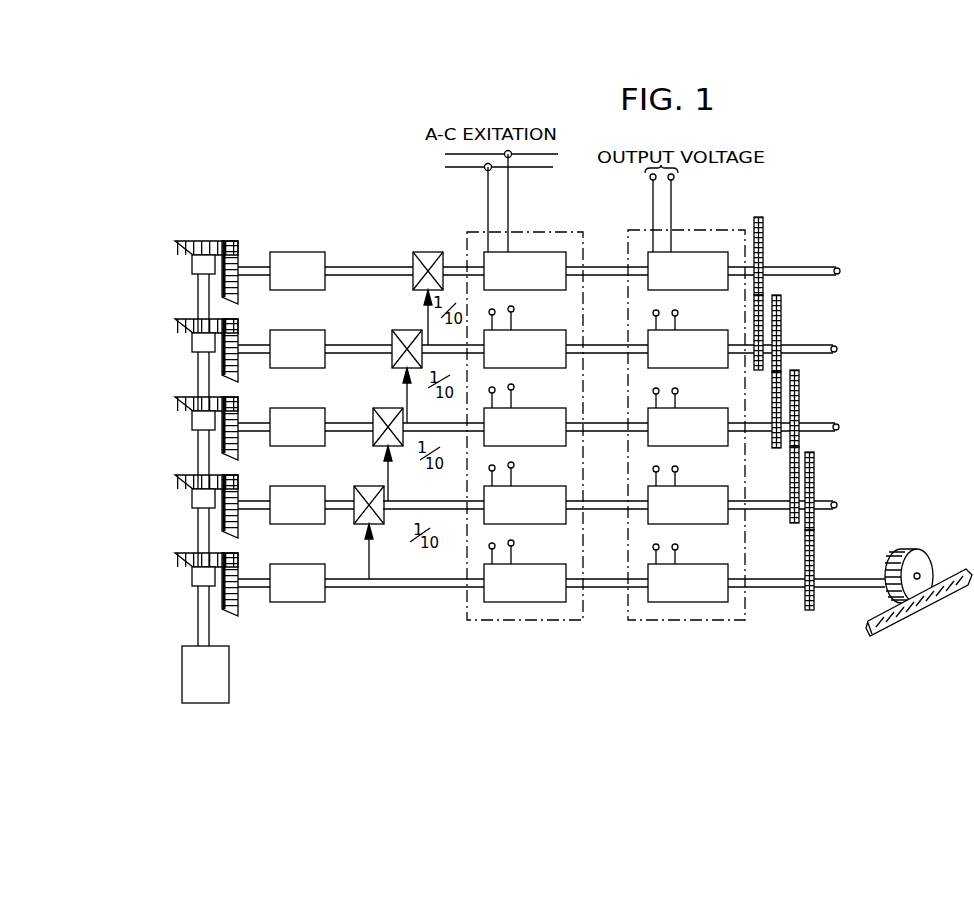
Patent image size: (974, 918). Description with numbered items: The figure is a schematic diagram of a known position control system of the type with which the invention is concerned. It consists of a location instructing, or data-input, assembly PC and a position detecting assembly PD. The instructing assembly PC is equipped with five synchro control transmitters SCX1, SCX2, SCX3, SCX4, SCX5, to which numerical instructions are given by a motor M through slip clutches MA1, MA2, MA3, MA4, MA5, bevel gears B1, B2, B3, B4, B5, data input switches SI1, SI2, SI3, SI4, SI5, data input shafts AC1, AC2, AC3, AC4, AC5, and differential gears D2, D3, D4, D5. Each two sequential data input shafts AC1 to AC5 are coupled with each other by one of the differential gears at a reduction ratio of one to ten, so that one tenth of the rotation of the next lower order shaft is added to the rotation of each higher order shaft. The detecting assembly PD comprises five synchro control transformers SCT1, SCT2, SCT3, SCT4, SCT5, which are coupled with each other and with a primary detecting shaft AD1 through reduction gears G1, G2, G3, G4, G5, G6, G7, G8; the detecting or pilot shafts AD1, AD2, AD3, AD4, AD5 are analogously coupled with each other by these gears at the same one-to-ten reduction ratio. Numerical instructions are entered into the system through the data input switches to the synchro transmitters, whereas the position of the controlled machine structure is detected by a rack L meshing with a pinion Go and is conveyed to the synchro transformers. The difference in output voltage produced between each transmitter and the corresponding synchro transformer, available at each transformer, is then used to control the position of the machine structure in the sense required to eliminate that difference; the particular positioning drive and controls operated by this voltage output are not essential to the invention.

The motor M is at (205, 674).
The bevel gear B1 is at (186, 553).
The bevel gear B2 is at (186, 475).
The bevel gear B3 is at (186, 397).
The bevel gear B4 is at (186, 318).
The bevel gear B5 is at (186, 240).
The slip clutch MA1 is at (192, 575).
The slip clutch MA2 is at (192, 497).
The slip clutch MA3 is at (192, 419).
The slip clutch MA4 is at (192, 341).
The slip clutch MA5 is at (192, 263).
The data input switch SI1 is at (297, 583).
The data input switch SI2 is at (297, 505).
The data input switch SI3 is at (297, 427).
The data input switch SI4 is at (297, 349).
The data input switch SI5 is at (297, 271).
The data input shaft AC1 is at (340, 579).
The data input shaft AC2 is at (348, 501).
The data input shaft AC3 is at (350, 423).
The data input shaft AC4 is at (353, 345).
The data input shaft AC5 is at (360, 267).
The differential gear D2 is at (370, 486).
The differential gear D3 is at (394, 405).
The differential gear D4 is at (408, 327).
The differential gear D5 is at (430, 247).
The synchro control transmitter SCX1 is at (525, 571).
The synchro control transmitter SCX2 is at (525, 493).
The synchro control transmitter SCX3 is at (525, 415).
The synchro control transmitter SCX4 is at (525, 337).
The synchro control transmitter SCX5 is at (525, 222).
The synchro control transformer SCT1 is at (688, 573).
The synchro control transformer SCT2 is at (688, 495).
The synchro control transformer SCT3 is at (688, 417).
The synchro control transformer SCT4 is at (688, 339).
The synchro control transformer SCT5 is at (688, 235).
The location instructing assembly PC is at (528, 232).
The position detecting assembly PD is at (692, 235).
The primary detecting shaft AD1 is at (858, 580).
The detecting shaft AD2 is at (834, 503).
The detecting shaft AD3 is at (836, 428).
The detecting shaft AD4 is at (830, 340).
The detecting shaft AD5 is at (828, 261).
The reduction gear G1 is at (815, 566).
The reduction gear G2 is at (814, 484).
The reduction gear G3 is at (797, 527).
The reduction gear G4 is at (799, 412).
The reduction gear G5 is at (776, 448).
The reduction gear G6 is at (781, 331).
The reduction gear G7 is at (759, 362).
The reduction gear G8 is at (762, 232).
The pinion Go is at (927, 566).
The rack L is at (931, 600).